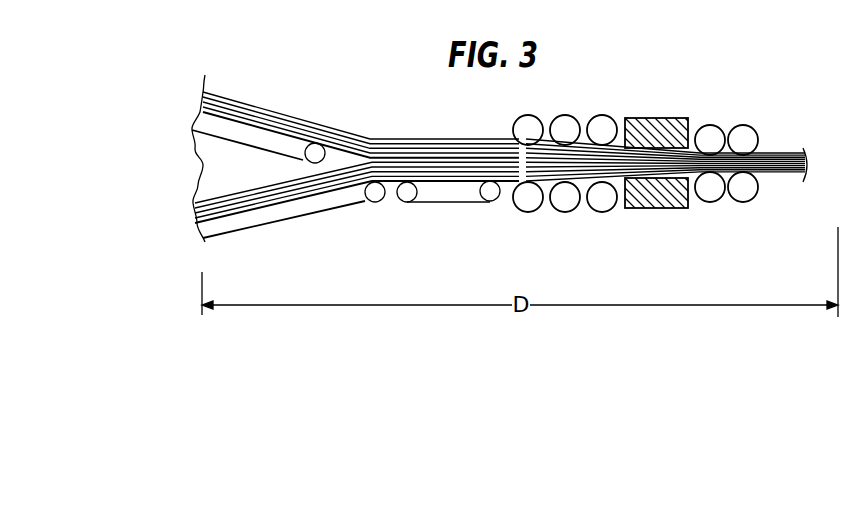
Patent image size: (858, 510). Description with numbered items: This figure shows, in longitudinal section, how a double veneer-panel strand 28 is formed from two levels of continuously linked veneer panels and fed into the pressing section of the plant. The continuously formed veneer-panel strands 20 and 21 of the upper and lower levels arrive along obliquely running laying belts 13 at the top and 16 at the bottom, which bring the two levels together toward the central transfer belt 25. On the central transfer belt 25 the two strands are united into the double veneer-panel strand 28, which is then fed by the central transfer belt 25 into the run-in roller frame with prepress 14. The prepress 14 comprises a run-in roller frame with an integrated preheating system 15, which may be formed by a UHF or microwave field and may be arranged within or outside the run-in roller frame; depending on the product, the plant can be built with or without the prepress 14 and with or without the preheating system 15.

The laying belt 13 is at (250, 133).
The laying belt 16 is at (318, 203).
The central transfer belt 25 is at (410, 194).
The veneer-panel strand 21 is at (442, 172).
The veneer-panel strand 20 is at (475, 172).
The prepress 14 is at (566, 197).
The preheating system 15 is at (657, 210).
The double veneer-panel strand 28 is at (790, 172).